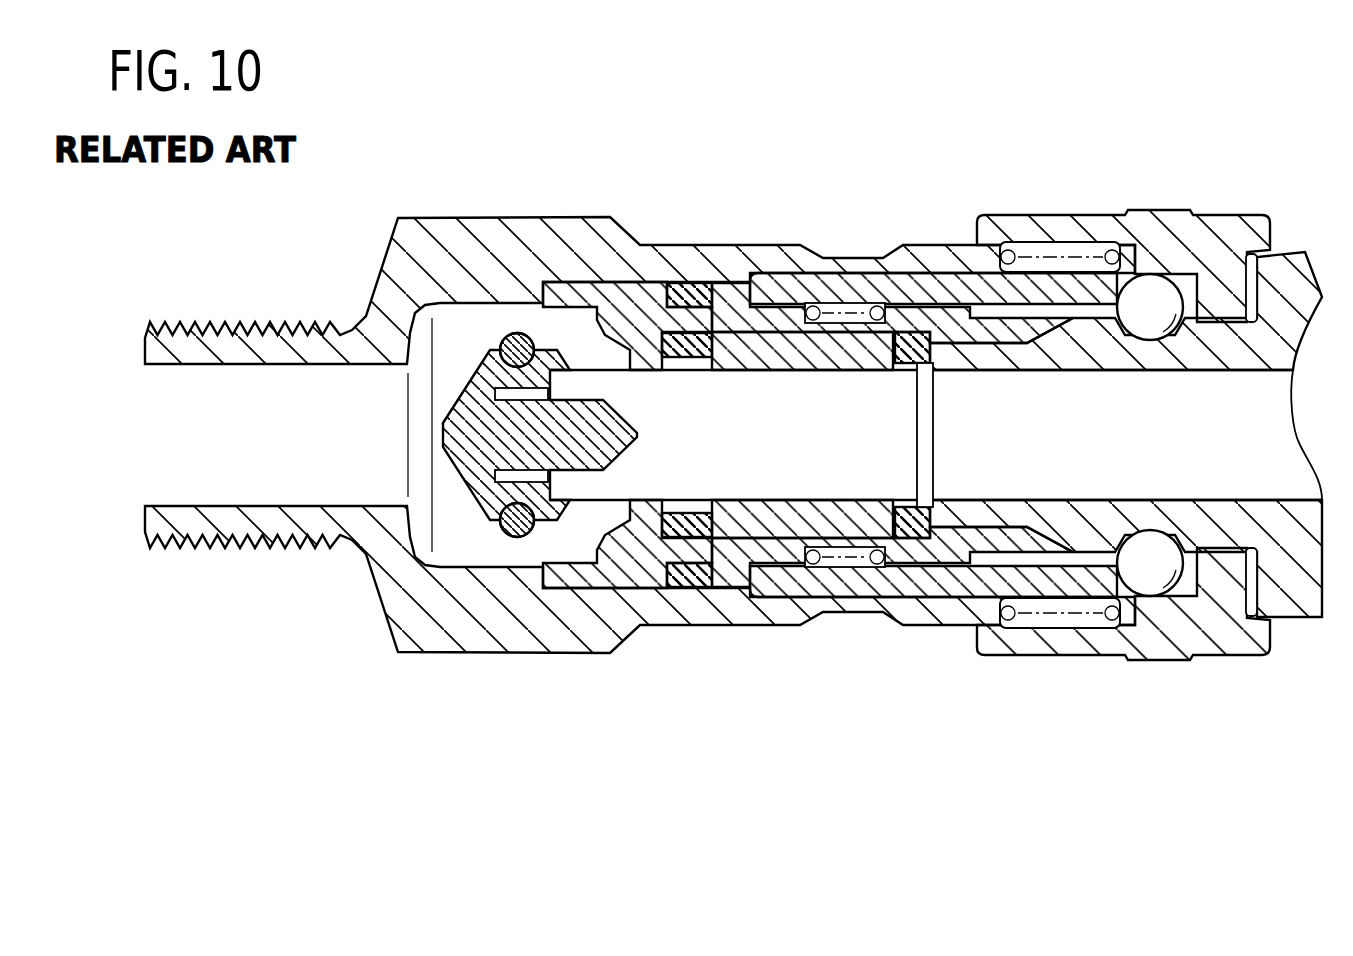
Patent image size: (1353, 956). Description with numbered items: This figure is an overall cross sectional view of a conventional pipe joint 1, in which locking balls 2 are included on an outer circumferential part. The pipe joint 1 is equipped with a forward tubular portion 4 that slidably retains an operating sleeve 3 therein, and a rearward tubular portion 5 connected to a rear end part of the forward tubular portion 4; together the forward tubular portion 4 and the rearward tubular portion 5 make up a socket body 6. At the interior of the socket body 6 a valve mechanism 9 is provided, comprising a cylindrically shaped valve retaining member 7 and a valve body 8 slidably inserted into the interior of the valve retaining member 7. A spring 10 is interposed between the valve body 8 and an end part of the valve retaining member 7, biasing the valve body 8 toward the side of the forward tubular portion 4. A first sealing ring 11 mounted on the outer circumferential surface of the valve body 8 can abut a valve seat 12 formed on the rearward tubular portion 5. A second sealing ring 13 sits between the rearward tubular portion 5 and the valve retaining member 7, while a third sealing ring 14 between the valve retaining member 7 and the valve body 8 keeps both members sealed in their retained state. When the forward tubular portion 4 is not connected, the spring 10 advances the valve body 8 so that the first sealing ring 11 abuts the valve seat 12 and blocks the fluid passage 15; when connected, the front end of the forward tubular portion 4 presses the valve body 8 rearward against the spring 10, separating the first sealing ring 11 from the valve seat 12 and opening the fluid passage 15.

The pipe joint 1 is at (1273, 134).
The locking balls 2 is at (1152, 302).
The operating sleeve 3 is at (1098, 640).
The forward tubular portion 4 is at (920, 283).
The rearward tubular portion 5 is at (558, 625).
The socket body 6 is at (480, 212).
The valve retaining member 7 is at (740, 590).
The valve body 8 is at (770, 512).
The valve mechanism 9 is at (466, 513).
The spring 10 is at (858, 567).
The first sealing ring 11 is at (517, 333).
The valve seat 12 is at (597, 305).
The second sealing ring 13 is at (682, 590).
The third sealing ring 14 is at (690, 358).
The fluid passage 15 is at (795, 395).